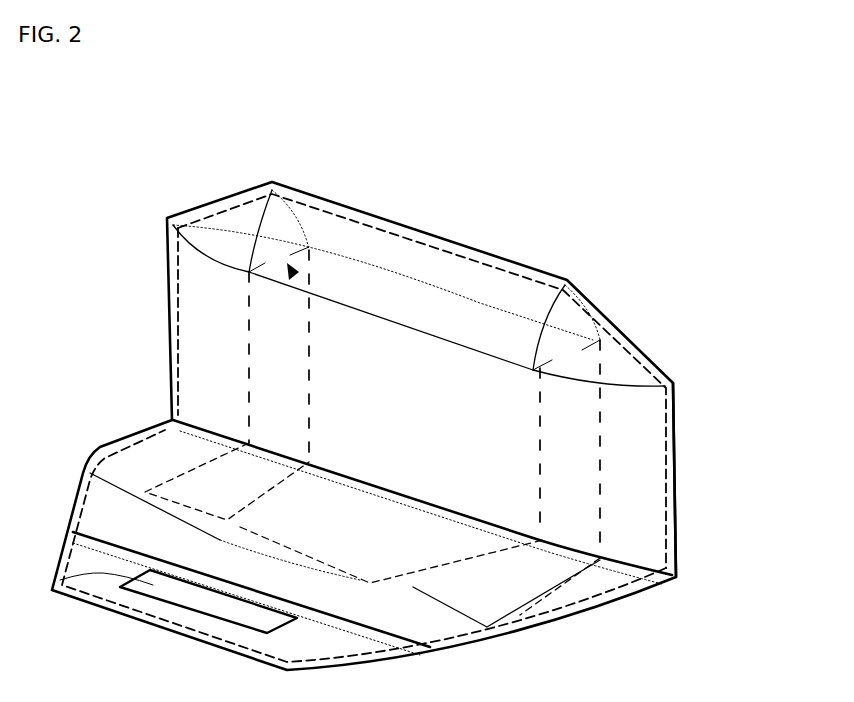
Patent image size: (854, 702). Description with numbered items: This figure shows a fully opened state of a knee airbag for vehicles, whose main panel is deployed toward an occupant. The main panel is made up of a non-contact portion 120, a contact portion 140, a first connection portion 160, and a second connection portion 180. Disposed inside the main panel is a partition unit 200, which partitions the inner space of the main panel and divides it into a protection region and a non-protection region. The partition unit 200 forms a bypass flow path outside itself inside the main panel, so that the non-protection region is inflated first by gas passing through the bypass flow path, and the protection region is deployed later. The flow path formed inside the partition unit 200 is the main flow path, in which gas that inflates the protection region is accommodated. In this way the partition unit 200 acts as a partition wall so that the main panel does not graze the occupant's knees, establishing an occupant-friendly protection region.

The partition unit 200 is at (238, 193).
The first connection portion 160 is at (424, 258).
The contact portion 140 is at (628, 427).
The non-contact portion 120 is at (162, 438).
The second connection portion 180 is at (130, 583).